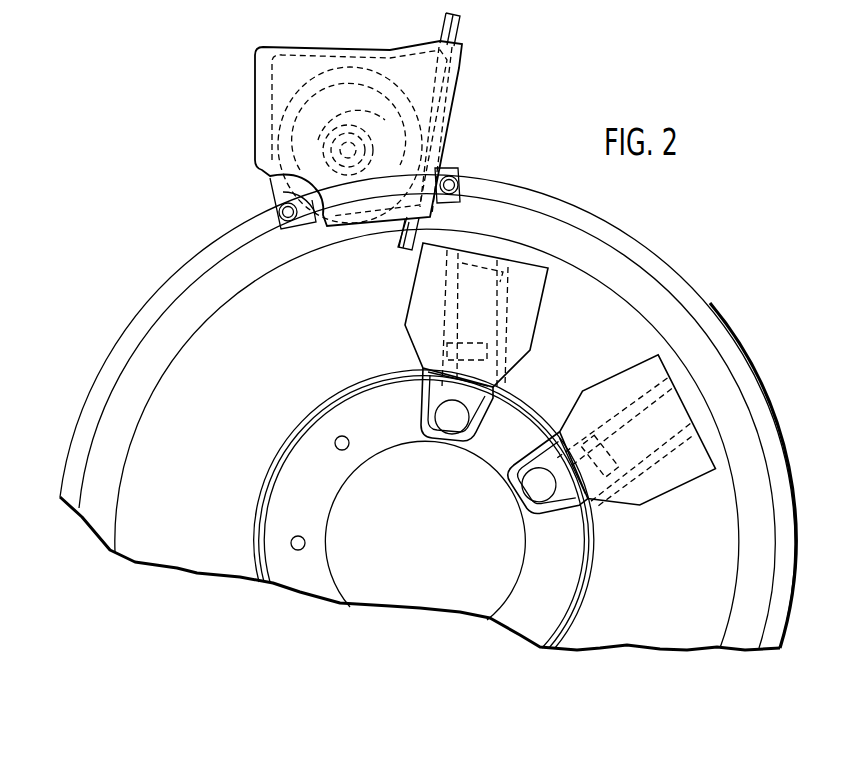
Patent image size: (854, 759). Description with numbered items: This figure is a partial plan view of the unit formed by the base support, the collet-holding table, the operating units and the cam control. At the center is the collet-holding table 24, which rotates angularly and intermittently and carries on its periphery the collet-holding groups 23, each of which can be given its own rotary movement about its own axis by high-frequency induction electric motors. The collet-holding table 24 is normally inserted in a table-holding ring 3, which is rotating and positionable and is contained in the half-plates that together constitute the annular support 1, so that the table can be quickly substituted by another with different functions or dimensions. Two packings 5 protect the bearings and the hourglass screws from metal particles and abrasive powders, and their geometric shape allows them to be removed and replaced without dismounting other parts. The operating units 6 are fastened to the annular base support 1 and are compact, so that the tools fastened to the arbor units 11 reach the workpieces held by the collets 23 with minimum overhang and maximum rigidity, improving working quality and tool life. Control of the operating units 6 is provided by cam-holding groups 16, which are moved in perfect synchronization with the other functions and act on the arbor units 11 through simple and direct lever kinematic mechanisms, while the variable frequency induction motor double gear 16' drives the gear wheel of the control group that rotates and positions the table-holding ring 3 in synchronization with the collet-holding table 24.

The annular support 1 is at (712, 512).
The table-holding ring 3 is at (533, 408).
The packings 5 is at (505, 403).
The operating units 6 is at (489, 332).
The arbor units 11 is at (500, 263).
The cam-holding groups 16 is at (332, 131).
The variable frequency induction motor double gear 16' is at (334, 198).
The collet-holding groups 23 is at (340, 452).
The collet-holding table 24 is at (409, 504).